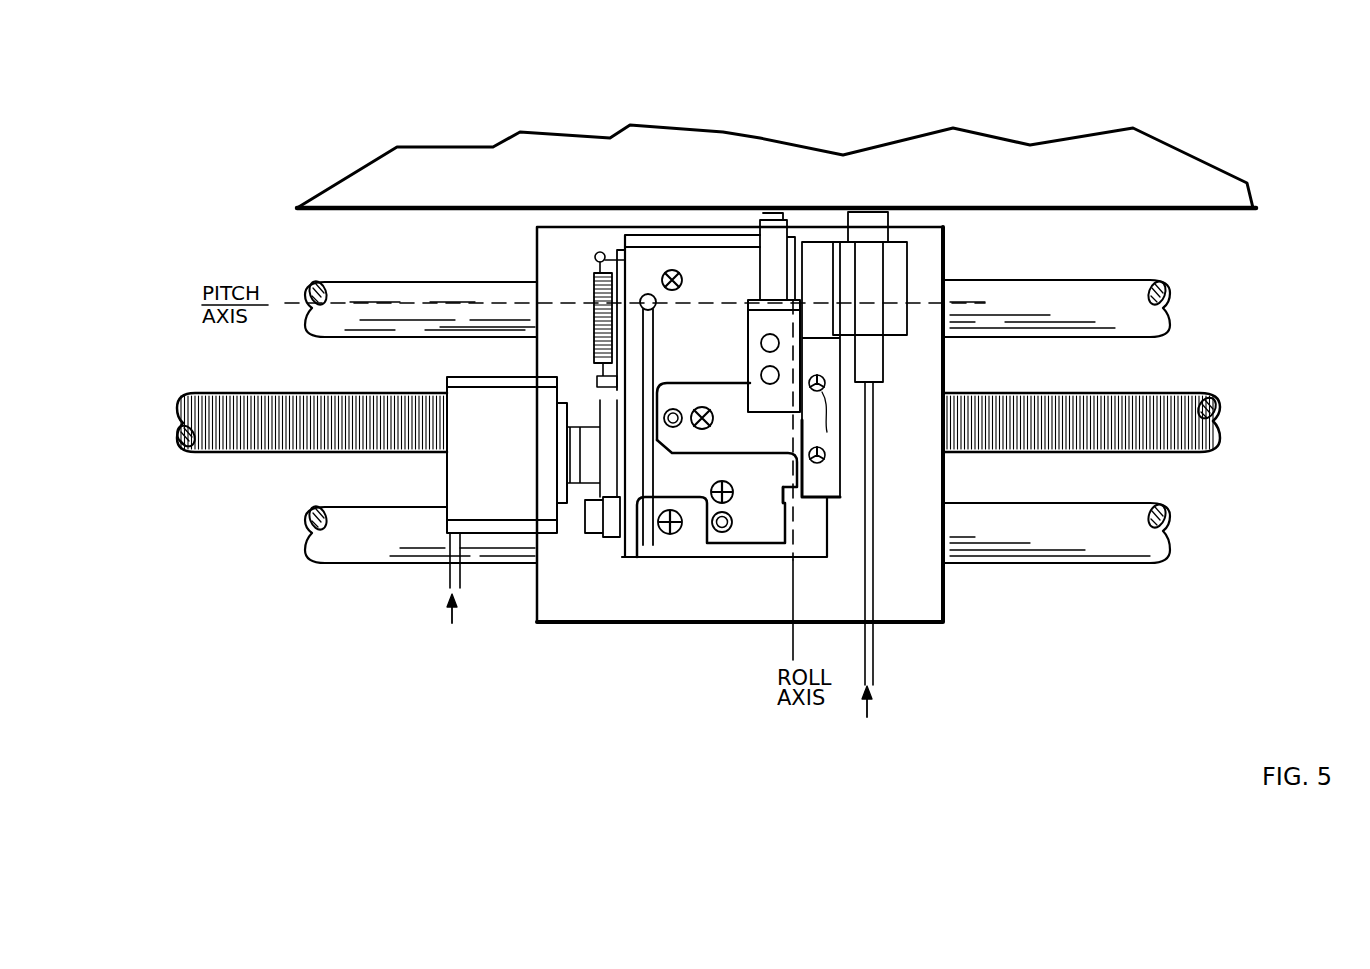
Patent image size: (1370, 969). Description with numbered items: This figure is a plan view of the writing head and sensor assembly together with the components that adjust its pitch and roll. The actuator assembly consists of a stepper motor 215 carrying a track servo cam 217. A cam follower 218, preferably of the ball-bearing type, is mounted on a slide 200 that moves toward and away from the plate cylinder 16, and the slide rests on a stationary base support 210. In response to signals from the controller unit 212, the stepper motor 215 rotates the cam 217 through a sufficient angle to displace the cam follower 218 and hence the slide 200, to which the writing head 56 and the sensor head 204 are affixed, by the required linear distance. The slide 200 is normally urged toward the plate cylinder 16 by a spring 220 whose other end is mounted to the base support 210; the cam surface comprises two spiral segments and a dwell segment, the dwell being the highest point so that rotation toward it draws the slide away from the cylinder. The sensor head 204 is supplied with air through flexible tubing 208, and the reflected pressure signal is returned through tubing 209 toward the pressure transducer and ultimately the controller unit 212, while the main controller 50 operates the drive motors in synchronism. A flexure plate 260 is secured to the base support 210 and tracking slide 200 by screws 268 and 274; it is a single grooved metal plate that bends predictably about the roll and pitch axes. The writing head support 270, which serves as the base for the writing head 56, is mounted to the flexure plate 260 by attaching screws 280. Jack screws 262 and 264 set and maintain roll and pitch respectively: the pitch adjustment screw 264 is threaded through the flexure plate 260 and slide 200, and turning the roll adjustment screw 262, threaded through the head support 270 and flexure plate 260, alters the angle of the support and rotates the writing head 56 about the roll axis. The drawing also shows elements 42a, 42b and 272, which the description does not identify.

The plate cylinder 16 is at (522, 160).
The stationary base support 210 is at (557, 237).
The attaching screw 274 is at (672, 268).
The slide 200 is at (703, 240).
The sensor head 204 is at (773, 207).
The writing head 56 is at (872, 230).
The flexure plate 260 is at (633, 267).
The spring 220 is at (590, 280).
The track servo cam 217 is at (607, 405).
The stepper motor 215 is at (463, 470).
The flexible tubing 208 is at (762, 342).
The tubing 209 is at (762, 374).
The attaching screws 280 is at (817, 455).
The guide shaft 42b is at (1247, 315).
The threaded lead screw 42a is at (1220, 418).
The writing head support 270 is at (783, 490).
The attaching screw 268 is at (668, 533).
The cam follower 218 is at (597, 537).
The roll adjustment screw 262 is at (650, 492).
The screws 272 is at (698, 542).
The pitch adjustment screw 264 is at (740, 512).
The controller unit 212 is at (454, 619).
The controller 50 is at (932, 593).